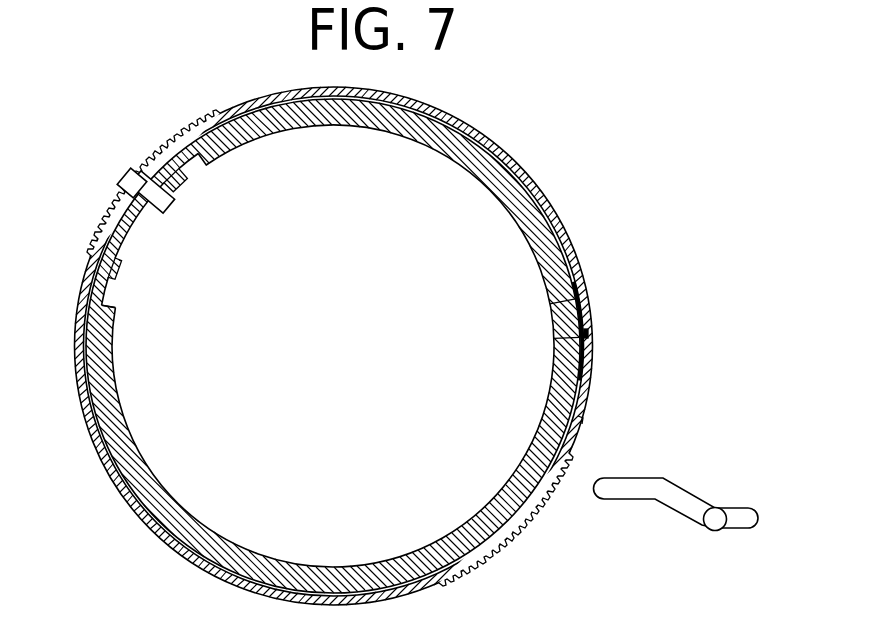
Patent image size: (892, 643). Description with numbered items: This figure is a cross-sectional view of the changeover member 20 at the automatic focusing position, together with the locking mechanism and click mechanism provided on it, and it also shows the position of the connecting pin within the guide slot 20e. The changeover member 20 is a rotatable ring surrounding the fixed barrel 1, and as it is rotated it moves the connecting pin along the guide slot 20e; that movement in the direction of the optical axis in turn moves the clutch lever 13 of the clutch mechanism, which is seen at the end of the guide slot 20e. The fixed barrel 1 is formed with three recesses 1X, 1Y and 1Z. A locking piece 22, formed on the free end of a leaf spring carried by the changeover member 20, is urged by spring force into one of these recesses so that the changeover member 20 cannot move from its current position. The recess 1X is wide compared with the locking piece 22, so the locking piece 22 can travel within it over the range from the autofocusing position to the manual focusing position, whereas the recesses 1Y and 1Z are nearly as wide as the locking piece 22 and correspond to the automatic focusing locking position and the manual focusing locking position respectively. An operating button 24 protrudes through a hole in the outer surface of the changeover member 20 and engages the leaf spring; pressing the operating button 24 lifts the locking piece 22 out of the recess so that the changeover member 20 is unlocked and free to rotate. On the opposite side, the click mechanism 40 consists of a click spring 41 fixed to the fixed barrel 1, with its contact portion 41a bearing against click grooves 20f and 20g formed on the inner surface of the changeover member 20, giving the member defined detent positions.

The fixed barrel 1 is at (333, 346).
The recess 1X is at (128, 240).
The recess 1Y is at (178, 173).
The recess 1Z is at (103, 290).
The changeover member 20 is at (515, 145).
The guide slot 20e is at (643, 476).
The click groove 20f is at (590, 412).
The click groove 20g is at (596, 336).
The locking piece 22 is at (155, 205).
The operating button 24 is at (128, 178).
The click mechanism 40 is at (505, 325).
The click spring 41 is at (553, 305).
The contact portion of fixing member 41a is at (555, 350).
The clutch lever 13 is at (713, 526).